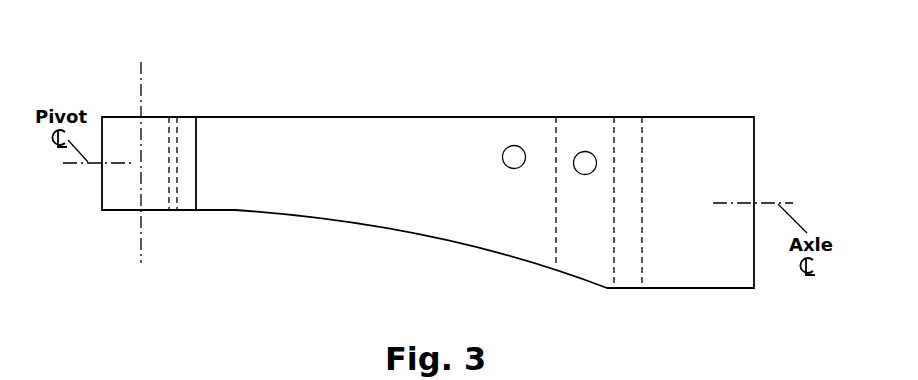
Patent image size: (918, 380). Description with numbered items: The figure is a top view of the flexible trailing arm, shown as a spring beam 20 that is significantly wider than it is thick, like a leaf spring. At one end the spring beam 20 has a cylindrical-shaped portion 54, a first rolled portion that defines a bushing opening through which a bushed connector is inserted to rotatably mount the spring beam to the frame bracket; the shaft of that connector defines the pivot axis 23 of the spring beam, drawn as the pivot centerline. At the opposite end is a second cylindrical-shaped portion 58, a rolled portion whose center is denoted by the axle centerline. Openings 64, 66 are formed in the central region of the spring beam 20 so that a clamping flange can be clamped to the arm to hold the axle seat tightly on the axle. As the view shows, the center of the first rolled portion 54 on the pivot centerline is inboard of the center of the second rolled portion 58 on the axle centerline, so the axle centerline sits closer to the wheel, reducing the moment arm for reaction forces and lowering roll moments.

The spring beam 20 is at (309, 105).
The pivot axis 23 is at (140, 223).
The cylindrical-shaped portion 54 is at (154, 115).
The cylindrical-shaped portion 58 is at (688, 114).
The opening 64 is at (513, 145).
The opening 66 is at (587, 151).